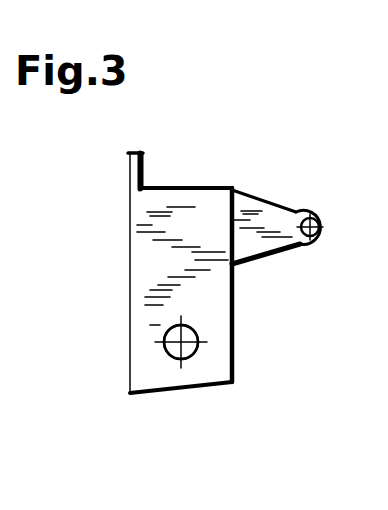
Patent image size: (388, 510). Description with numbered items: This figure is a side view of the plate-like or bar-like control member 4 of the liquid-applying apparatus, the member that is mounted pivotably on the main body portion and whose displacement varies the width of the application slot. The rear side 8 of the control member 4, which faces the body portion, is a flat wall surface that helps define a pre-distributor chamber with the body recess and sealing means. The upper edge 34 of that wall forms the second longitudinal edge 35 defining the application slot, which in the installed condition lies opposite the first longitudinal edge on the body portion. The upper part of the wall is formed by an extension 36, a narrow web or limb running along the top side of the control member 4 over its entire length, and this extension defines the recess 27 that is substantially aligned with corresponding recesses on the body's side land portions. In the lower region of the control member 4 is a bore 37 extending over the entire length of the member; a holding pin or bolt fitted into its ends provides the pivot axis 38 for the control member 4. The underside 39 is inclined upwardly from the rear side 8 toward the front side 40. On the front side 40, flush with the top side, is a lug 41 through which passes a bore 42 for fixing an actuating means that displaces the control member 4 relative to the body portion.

The control member 4 is at (262, 163).
The rear side 8 is at (129, 272).
The recess 27 is at (167, 178).
The upper edge 34 is at (127, 155).
The second longitudinal edge 35 is at (132, 151).
The extension 36 is at (145, 159).
The bore 37 is at (188, 358).
The pivot axis 38 is at (195, 330).
The underside 39 is at (173, 396).
The front side 40 is at (234, 290).
The lug 41 is at (276, 213).
The bore 42 is at (322, 240).